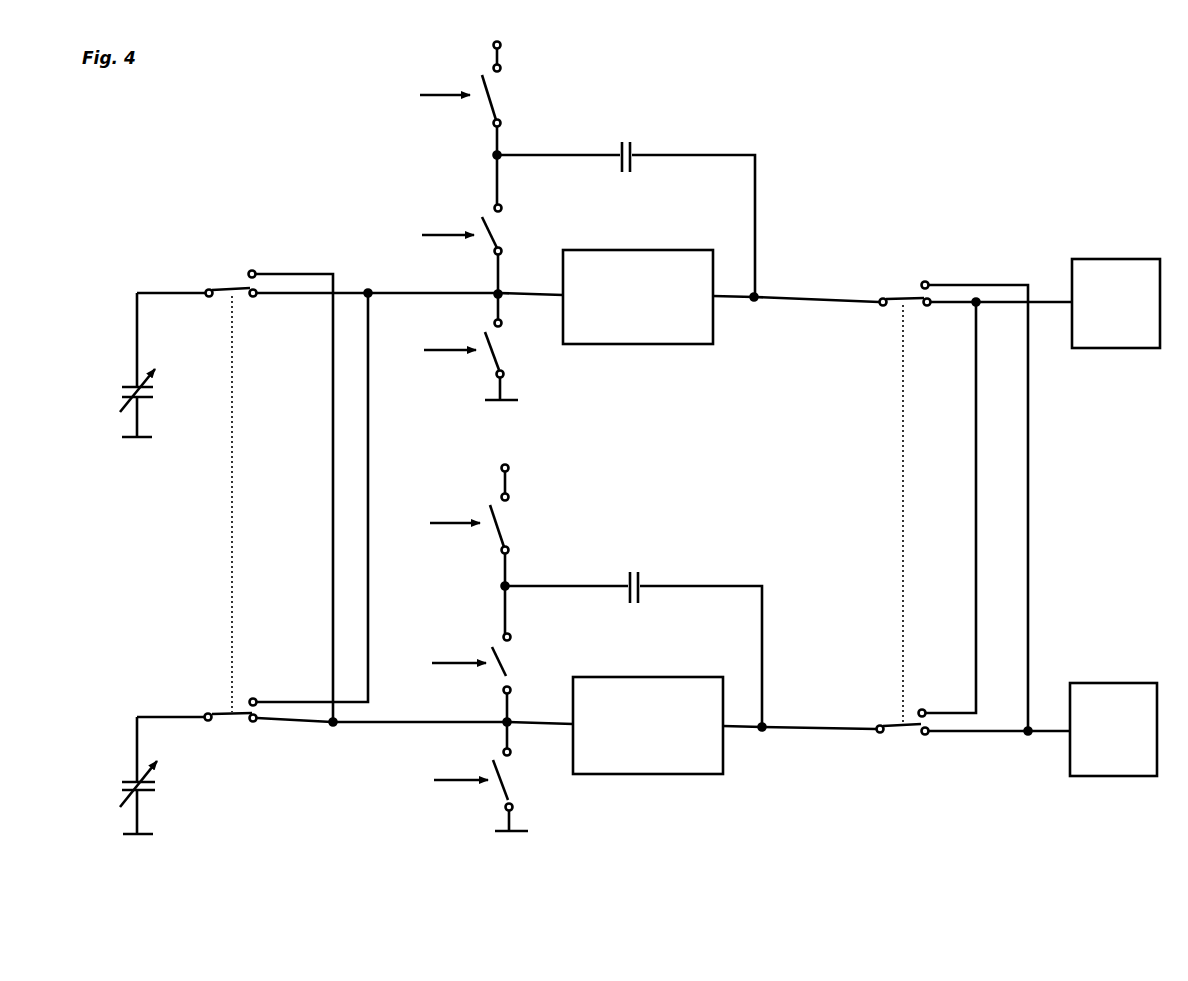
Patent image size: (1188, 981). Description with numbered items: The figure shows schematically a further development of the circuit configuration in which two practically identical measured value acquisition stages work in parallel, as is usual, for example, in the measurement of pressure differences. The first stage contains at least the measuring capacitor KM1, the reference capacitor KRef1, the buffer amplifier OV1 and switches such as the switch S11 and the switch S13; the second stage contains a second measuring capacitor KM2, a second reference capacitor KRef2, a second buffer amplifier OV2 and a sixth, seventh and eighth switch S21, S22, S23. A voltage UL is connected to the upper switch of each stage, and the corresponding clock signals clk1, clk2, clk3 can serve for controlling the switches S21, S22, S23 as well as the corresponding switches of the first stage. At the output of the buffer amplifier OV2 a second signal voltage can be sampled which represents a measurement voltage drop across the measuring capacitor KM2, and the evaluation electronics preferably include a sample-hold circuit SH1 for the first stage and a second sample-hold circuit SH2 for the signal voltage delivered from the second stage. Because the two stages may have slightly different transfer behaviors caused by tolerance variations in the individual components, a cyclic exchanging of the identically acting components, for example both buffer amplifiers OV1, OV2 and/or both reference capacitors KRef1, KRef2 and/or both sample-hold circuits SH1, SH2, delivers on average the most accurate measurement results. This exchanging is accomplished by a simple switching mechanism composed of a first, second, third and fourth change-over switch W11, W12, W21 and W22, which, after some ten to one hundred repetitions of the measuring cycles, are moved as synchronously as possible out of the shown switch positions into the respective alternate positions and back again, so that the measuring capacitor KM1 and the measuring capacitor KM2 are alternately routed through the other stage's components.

The first change-over switch W11 is at (217, 288).
The second change-over switch W12 is at (892, 296).
The third change-over switch W21 is at (226, 731).
The fourth change-over switch W22 is at (895, 741).
The measuring capacitor KM1 is at (122, 390).
The second measuring capacitor KM2 is at (124, 774).
The charging voltage UL is at (500, 260).
The seventh switch S22 is at (492, 98).
The switch S13 is at (492, 240).
The switch S11 is at (495, 368).
The eighth switch S23 is at (500, 670).
The sixth switch S21 is at (503, 798).
The reference capacitor KRef1 is at (632, 165).
The second reference capacitor KRef2 is at (640, 596).
The buffer amplifier OV1 is at (622, 344).
The second buffer amplifier OV2 is at (630, 774).
The sample-hold circuit SH1 is at (1132, 348).
The second sample-hold circuit SH2 is at (1130, 776).
The clock signal clk1 is at (455, 553).
The clock signal clk2 is at (448, 296).
The clock signal clk3 is at (453, 436).